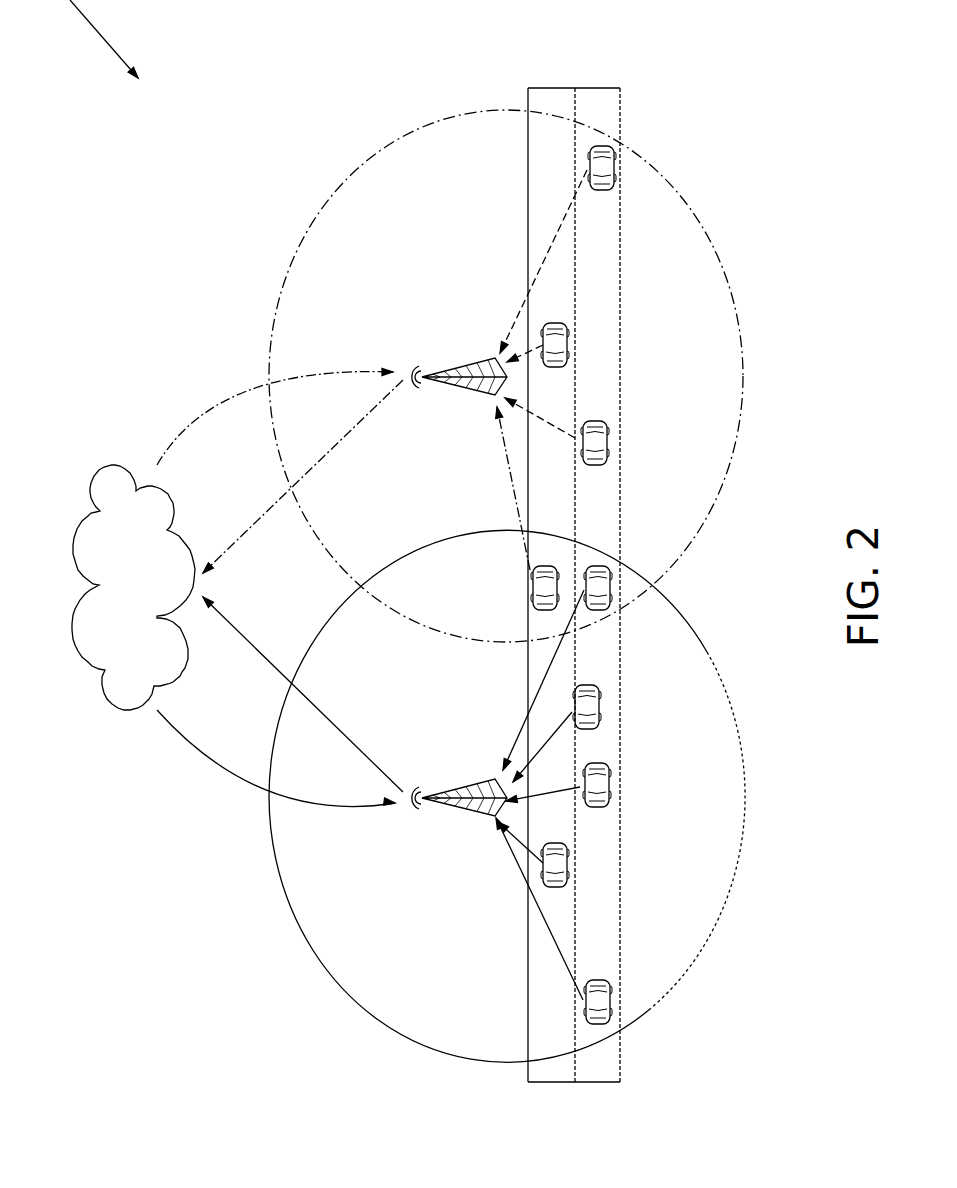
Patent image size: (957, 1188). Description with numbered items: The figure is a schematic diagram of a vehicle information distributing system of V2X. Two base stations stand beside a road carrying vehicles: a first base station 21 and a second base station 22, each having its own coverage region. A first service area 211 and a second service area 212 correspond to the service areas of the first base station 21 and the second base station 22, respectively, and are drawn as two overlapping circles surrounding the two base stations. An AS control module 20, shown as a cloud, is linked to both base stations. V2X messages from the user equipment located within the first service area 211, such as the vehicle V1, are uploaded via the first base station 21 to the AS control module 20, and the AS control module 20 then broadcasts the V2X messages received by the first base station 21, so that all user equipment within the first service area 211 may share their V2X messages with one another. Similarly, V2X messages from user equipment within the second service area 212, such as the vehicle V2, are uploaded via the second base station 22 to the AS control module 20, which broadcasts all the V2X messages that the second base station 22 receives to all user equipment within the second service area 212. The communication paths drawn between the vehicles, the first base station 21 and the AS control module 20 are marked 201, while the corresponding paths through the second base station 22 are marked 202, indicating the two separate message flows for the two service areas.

The AS control module 20 is at (74, 545).
The first base station 21 is at (462, 807).
The second base station 22 is at (463, 360).
The first communication link 201 is at (233, 775).
The second communication link 202 is at (203, 418).
The first service area 211 is at (705, 946).
The second service area 212 is at (690, 207).
The first vehicle V1 is at (612, 1001).
The second vehicle V2 is at (616, 169).